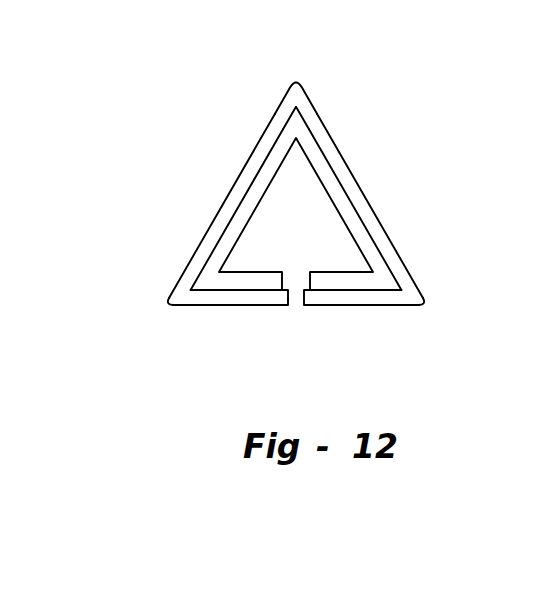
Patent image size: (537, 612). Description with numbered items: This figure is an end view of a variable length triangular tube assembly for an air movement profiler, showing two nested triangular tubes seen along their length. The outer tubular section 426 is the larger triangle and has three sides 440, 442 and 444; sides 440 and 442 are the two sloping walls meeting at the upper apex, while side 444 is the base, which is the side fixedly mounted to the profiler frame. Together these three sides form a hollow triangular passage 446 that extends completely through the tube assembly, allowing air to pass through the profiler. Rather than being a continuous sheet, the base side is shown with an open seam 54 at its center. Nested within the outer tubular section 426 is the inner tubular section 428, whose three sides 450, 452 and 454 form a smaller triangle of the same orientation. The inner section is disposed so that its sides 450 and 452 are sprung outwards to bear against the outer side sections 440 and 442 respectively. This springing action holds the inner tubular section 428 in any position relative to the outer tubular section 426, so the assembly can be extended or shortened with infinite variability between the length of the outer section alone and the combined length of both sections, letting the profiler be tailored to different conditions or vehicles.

The outer tubular section 426 is at (297, 98).
The side 442 is at (242, 170).
The side 452 is at (217, 226).
The side 440 is at (333, 155).
The side 450 is at (343, 208).
The side 454 is at (243, 280).
The inner tubular section 428 is at (384, 281).
The side 444 is at (355, 293).
The hollow triangular passage 446 is at (258, 258).
The open seam 54 is at (290, 293).